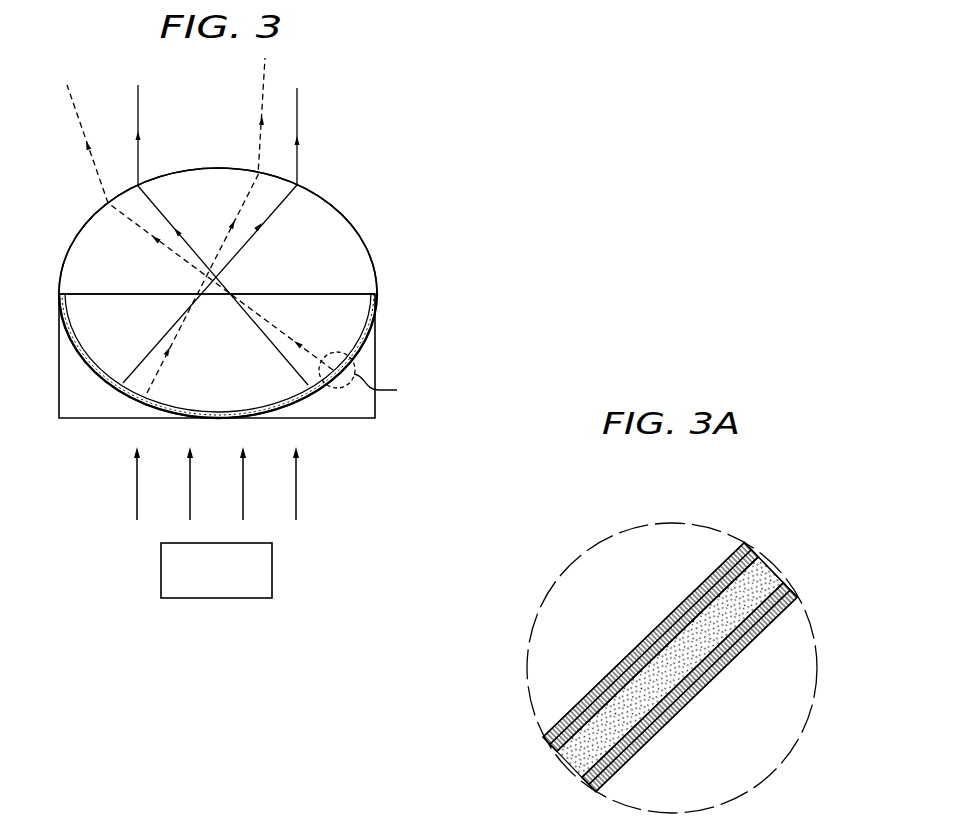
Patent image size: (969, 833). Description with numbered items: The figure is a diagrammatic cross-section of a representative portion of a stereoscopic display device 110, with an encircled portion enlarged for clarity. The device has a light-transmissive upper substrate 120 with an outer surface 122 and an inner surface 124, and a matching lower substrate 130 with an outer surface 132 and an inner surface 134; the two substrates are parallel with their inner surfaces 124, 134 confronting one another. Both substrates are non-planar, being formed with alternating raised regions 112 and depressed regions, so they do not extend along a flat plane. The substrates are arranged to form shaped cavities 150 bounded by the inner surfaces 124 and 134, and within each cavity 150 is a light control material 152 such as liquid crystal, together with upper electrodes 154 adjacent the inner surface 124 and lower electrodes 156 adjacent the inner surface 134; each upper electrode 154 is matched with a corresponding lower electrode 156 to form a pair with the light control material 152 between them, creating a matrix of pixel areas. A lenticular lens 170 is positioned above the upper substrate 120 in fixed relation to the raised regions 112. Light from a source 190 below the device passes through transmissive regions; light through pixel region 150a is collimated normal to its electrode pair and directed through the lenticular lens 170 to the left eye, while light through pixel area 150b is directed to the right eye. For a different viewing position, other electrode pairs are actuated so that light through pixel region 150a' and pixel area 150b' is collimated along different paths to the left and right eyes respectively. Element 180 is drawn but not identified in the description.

In FIG. 3, the stereoscopic display device 110 is at (368, 170).
In FIG. 3, the lenticular lens 170 is at (338, 212).
In FIG. 3, the upper substrate 120 is at (362, 297).
In FIG. 3A, the upper substrate 120 is at (713, 571).
In FIG. 3, the lower substrate 130 is at (370, 330).
In FIG. 3A, the lower substrate 130 is at (697, 692).
In FIG. 3, the raised region 112 is at (138, 305).
In FIG. 3, the housing base 180 is at (352, 418).
In FIG. 3, the light source 190 is at (197, 587).
In FIG. 3, the pixel region 150a is at (211, 235).
In FIG. 3, the pixel area 150b is at (222, 216).
In FIG. 3, the pixel region 150a' is at (206, 230).
In FIG. 3, the pixel area 150b' is at (262, 228).
In FIG. 3A, the outer surface 122 is at (687, 605).
In FIG. 3A, the inner surface 124 is at (663, 640).
In FIG. 3A, the outer surface 132 is at (672, 716).
In FIG. 3A, the inner surface 134 is at (652, 742).
In FIG. 3A, the shaped cavity 150 is at (580, 757).
In FIG. 3A, the light control material 152 is at (705, 648).
In FIG. 3A, the upper electrode 154 is at (752, 553).
In FIG. 3A, the lower electrode 156 is at (792, 600).